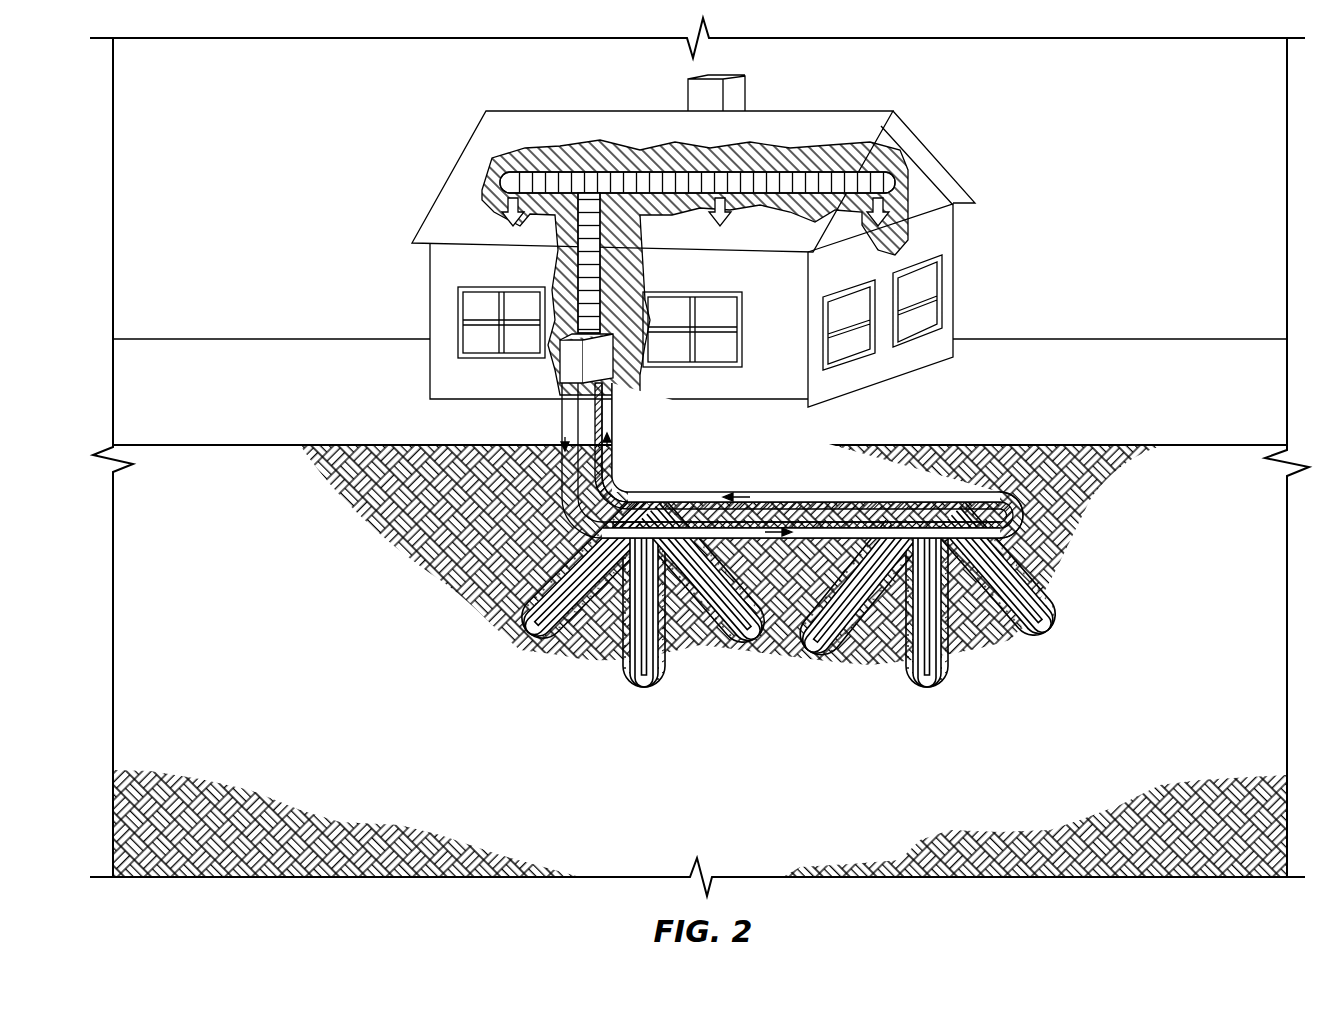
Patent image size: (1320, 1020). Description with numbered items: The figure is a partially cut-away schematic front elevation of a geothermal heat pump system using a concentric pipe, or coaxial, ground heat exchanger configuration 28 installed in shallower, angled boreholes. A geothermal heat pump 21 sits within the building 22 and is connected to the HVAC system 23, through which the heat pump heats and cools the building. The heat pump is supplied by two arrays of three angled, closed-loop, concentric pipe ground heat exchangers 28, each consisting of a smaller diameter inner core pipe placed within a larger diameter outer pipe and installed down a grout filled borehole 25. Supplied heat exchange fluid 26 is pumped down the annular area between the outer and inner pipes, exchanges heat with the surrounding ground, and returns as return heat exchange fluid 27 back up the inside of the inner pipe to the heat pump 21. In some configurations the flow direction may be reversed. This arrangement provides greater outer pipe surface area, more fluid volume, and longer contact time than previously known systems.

The GHP 21 is at (566, 375).
The building 22 is at (378, 297).
The HVAC system 23 is at (588, 185).
The grout filled borehole 25 is at (530, 652).
The supplied heat exchange fluid 26 is at (563, 405).
The return heat exchange fluid 27 is at (608, 405).
The concentric pipe GHEX configuration 28 is at (520, 628).